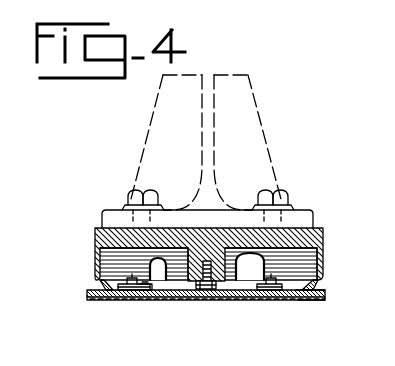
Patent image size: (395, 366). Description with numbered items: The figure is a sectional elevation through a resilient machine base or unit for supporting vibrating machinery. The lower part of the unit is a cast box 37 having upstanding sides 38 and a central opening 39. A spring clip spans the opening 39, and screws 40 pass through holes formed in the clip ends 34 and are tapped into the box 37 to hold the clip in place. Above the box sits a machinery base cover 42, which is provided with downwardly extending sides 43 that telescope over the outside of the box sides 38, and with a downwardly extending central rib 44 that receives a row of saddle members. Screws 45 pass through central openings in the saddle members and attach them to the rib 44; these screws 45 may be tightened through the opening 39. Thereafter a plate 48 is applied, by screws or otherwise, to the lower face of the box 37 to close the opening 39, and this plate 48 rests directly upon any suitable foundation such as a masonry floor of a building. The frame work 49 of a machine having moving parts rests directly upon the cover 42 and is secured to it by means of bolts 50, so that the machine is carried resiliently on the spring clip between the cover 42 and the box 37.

The clip ends 34 is at (298, 300).
The cast box 37 is at (327, 299).
The upstanding sides 38 is at (313, 288).
The central opening 39 is at (244, 297).
The screws 40 is at (112, 303).
The machinery base cover 42 is at (312, 237).
The downwardly extending sides 43 is at (322, 262).
The downwardly extending central rib 44 is at (178, 268).
The screws 45 is at (212, 292).
The plate 48 is at (138, 303).
The frame work 49 is at (142, 153).
The bolts 50 is at (133, 193).